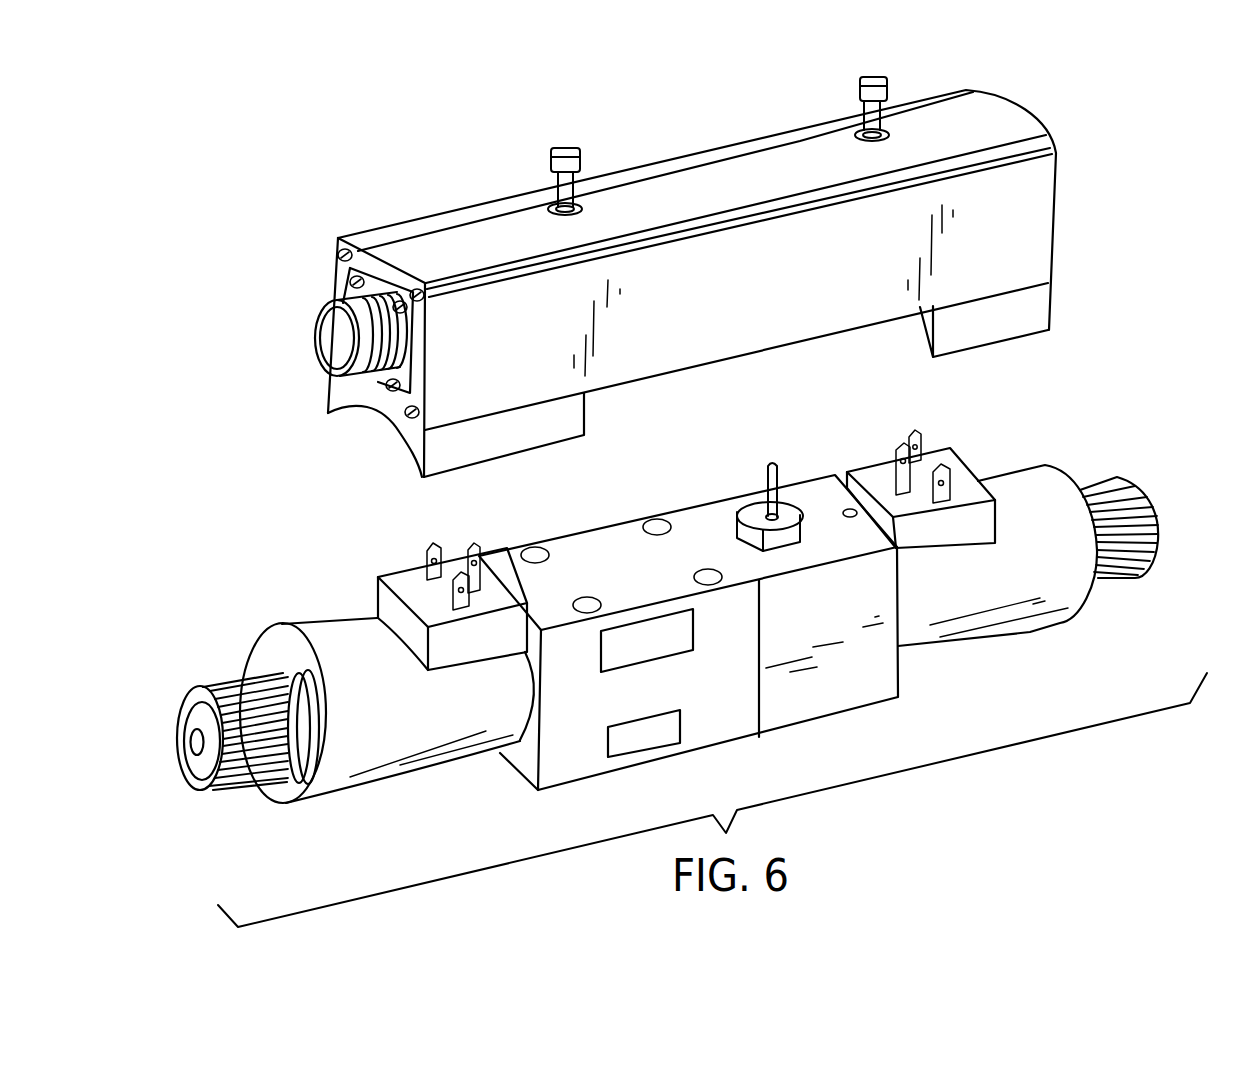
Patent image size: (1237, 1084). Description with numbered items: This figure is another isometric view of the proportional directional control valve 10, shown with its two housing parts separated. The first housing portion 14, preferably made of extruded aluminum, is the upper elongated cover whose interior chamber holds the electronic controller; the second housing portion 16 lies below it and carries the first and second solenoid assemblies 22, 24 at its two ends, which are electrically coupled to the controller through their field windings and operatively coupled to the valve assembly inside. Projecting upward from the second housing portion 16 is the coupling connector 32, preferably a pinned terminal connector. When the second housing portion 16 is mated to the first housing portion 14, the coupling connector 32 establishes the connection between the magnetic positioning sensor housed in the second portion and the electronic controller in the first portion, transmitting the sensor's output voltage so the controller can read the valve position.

The proportional directional control valve 10 is at (1168, 299).
The first housing portion 14 is at (302, 220).
The second housing portion 16 is at (1173, 420).
The first solenoid assembly 22 is at (372, 762).
The second solenoid assembly 24 is at (972, 632).
The coupling connector 32 is at (773, 462).